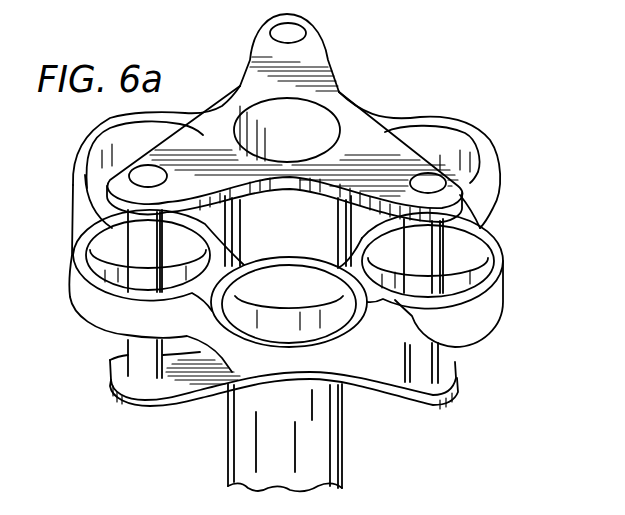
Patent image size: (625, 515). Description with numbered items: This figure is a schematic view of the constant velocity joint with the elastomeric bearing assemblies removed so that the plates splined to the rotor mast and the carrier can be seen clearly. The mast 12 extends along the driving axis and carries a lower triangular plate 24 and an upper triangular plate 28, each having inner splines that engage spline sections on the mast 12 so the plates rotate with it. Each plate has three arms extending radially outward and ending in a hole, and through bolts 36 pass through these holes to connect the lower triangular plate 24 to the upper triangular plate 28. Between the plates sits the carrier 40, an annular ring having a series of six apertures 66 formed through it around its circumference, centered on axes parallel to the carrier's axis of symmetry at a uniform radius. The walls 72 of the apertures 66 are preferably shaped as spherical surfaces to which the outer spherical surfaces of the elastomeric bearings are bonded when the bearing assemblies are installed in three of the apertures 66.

The mast 12 is at (343, 437).
The lower triangular plate 24 is at (199, 395).
The upper triangular plate 28 is at (332, 60).
The through bolts 36 is at (130, 352).
The carrier 40 is at (500, 324).
The apertures 66 is at (142, 147).
The walls 72 is at (87, 140).